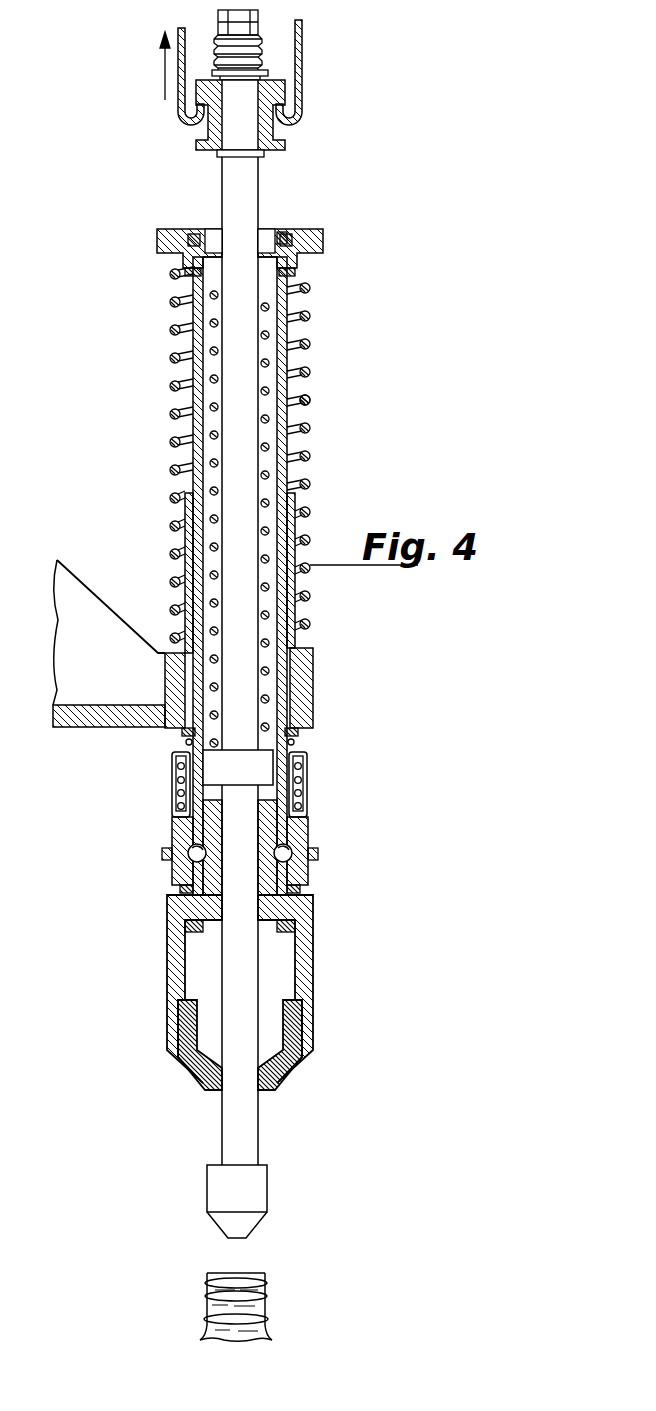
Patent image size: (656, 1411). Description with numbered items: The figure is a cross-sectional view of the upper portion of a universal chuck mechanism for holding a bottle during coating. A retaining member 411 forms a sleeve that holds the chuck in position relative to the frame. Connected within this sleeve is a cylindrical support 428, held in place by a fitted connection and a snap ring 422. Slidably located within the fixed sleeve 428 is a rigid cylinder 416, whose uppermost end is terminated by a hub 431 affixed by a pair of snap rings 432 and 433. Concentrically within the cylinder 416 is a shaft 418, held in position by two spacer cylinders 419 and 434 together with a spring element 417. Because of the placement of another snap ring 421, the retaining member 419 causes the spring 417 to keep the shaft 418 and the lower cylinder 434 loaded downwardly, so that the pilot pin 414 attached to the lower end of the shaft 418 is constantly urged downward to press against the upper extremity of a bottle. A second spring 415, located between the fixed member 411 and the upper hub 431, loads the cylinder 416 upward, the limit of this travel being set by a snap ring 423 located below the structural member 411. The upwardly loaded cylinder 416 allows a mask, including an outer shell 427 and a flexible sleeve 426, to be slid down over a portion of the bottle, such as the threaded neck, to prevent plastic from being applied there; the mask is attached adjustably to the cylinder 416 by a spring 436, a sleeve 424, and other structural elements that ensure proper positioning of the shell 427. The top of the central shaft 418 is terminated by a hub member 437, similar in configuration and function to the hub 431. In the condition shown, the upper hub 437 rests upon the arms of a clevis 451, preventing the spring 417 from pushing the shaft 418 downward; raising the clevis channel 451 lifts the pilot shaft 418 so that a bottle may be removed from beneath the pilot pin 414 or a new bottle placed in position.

The retaining member 411 is at (97, 717).
The pilot pin 414 is at (257, 1193).
The spring 415 is at (308, 399).
The rigid cylinder 416 is at (283, 332).
The spring element 417 is at (212, 462).
The shaft 418 is at (245, 193).
The spacer cylinder 419 is at (268, 284).
The snap ring 421 is at (277, 240).
The snap ring 422 is at (183, 732).
The snap ring 423 is at (178, 742).
The sleeve 424 is at (173, 842).
The flexible sleeve 426 is at (192, 1074).
The outer shell 427 is at (300, 958).
The cylindrical support 428 is at (188, 592).
The hub 431 is at (159, 240).
The snap ring 432 is at (192, 238).
The snap ring 433 is at (192, 277).
The spacer cylinder 434 is at (252, 773).
The spring 436 is at (170, 783).
The hub member 437 is at (272, 130).
The clevis 451 is at (178, 98).